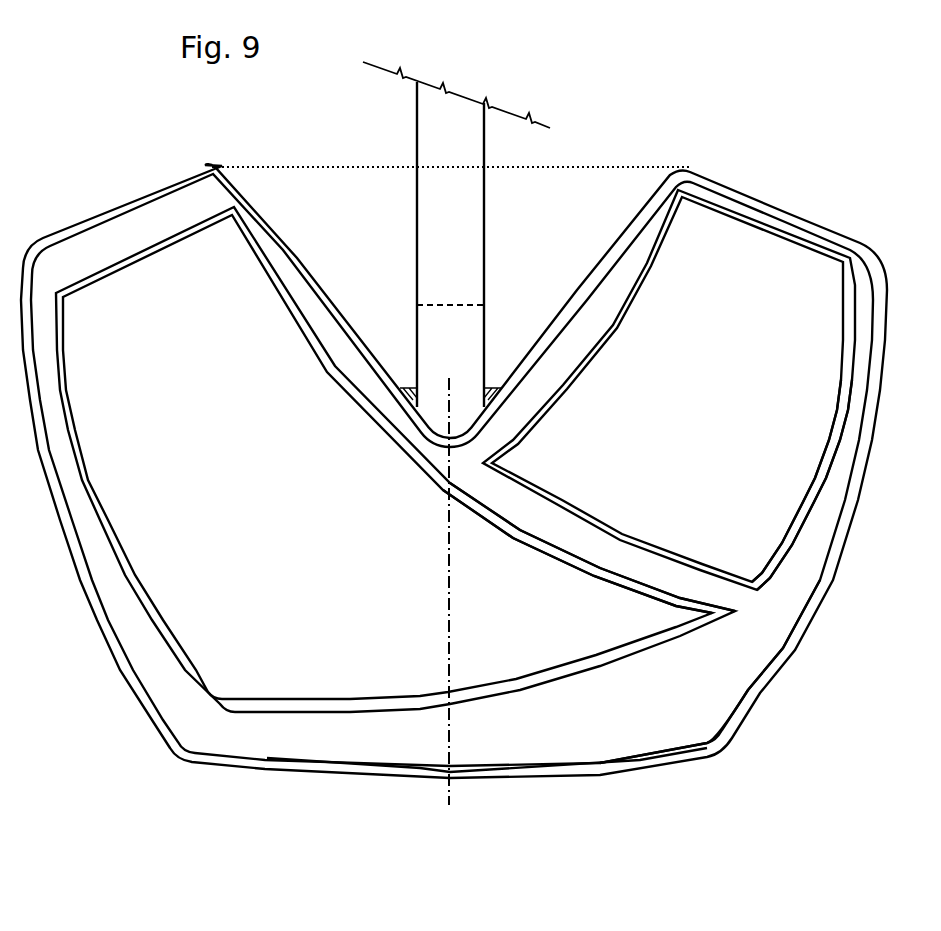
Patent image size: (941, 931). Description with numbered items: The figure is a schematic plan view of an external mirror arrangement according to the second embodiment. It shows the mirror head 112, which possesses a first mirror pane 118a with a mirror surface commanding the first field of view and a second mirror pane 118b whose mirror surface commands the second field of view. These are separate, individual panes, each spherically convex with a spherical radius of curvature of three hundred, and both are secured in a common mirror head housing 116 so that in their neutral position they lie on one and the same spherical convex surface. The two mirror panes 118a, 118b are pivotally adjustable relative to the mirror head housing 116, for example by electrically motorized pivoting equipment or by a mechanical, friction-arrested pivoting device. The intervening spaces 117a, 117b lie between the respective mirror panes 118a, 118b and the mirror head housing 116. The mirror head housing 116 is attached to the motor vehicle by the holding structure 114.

The mirror head 112 is at (278, 767).
The holding structure 114 is at (470, 148).
The mirror head housing 116 is at (735, 685).
The intervening space 117a is at (585, 665).
The intervening space 117b is at (790, 545).
The first mirror pane 118a is at (205, 623).
The second mirror pane 118b is at (775, 487).